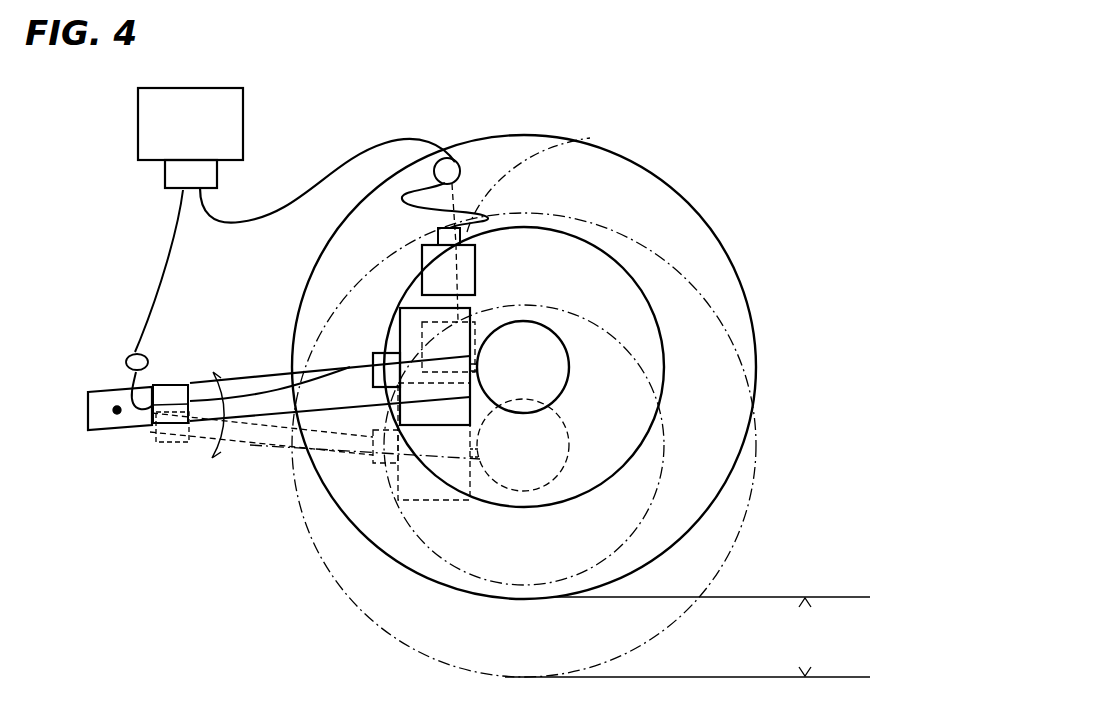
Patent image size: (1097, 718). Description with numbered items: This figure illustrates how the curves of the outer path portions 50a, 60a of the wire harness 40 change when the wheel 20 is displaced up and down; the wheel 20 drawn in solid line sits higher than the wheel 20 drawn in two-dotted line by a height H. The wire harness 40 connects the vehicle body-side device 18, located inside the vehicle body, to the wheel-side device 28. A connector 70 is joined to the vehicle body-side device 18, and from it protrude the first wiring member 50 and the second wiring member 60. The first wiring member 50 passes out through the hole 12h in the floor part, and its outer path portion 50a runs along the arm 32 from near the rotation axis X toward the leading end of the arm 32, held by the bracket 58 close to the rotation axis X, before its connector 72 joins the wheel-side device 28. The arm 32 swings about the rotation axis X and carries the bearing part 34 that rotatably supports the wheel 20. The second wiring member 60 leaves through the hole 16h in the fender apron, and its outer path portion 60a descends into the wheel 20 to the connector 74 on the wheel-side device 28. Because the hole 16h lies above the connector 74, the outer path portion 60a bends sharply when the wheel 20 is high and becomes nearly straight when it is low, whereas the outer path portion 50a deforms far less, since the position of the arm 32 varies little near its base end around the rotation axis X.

The vehicle body-side device 18 is at (244, 110).
The connector 70 is at (218, 178).
The wire harness 40 is at (155, 247).
The second wiring member 60 is at (347, 165).
The hole 16h is at (453, 158).
The outer path portion 60a is at (548, 140).
The wheel 20 is at (742, 266).
The bearing part 34 is at (571, 357).
The connector 74 is at (433, 237).
The connector 72 is at (374, 360).
The wheel-side device 28 is at (470, 317).
The arm 32 is at (247, 383).
The bracket 58 is at (200, 383).
The rotation axis X is at (117, 415).
The first wiring member 50 is at (147, 323).
The hole 12h is at (128, 360).
The outer path portion 50a is at (322, 342).
The height H is at (812, 633).